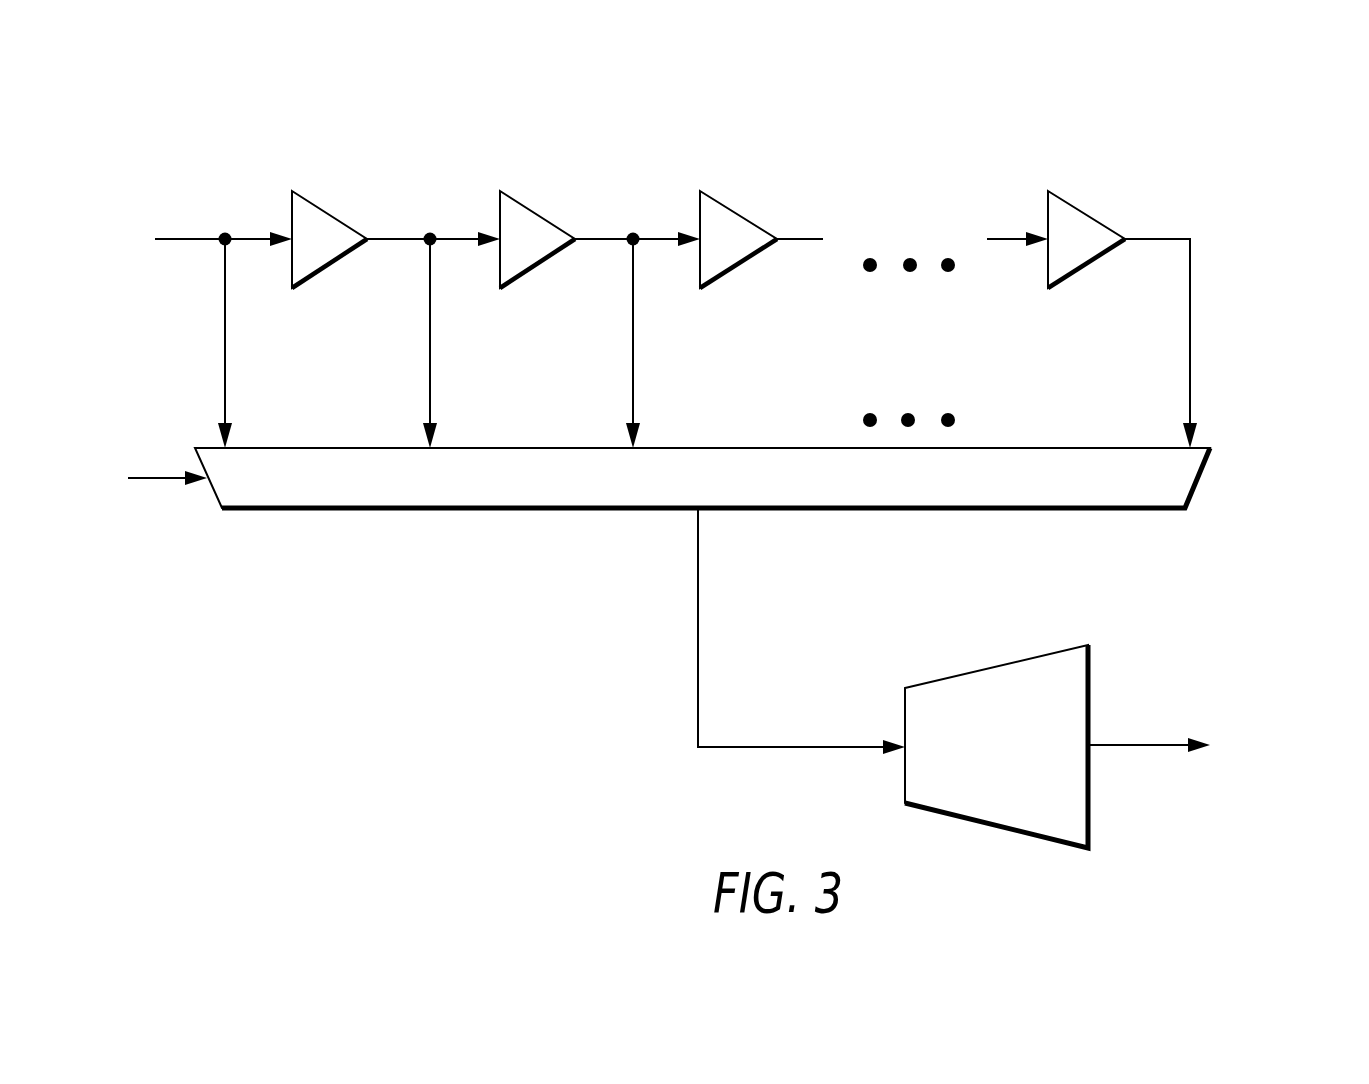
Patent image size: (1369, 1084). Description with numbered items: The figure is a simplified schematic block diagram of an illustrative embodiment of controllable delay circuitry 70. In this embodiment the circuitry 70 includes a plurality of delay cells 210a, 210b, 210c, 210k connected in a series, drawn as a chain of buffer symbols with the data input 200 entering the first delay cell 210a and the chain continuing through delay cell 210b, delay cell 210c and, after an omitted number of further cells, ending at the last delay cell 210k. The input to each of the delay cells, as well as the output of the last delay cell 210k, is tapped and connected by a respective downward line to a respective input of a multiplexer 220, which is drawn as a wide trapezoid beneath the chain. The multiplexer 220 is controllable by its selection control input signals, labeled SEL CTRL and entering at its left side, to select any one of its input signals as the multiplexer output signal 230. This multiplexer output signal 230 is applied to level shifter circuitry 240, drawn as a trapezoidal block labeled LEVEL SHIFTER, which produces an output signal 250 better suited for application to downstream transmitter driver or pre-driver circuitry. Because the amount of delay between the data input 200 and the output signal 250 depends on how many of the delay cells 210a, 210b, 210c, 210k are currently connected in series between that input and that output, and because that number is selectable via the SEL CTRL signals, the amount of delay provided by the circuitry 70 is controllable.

The controllable delay circuitry 70 is at (138, 93).
The data input 200 is at (187, 239).
The delay cell 210a is at (325, 208).
The delay cell 210b is at (533, 208).
The delay cell 210c is at (728, 203).
The delay cell 210k is at (1078, 210).
The multiplexer 220 is at (1197, 470).
The multiplexer output signal 230 is at (698, 638).
The level shifter circuitry 240 is at (980, 670).
The output signal 250 is at (1130, 745).